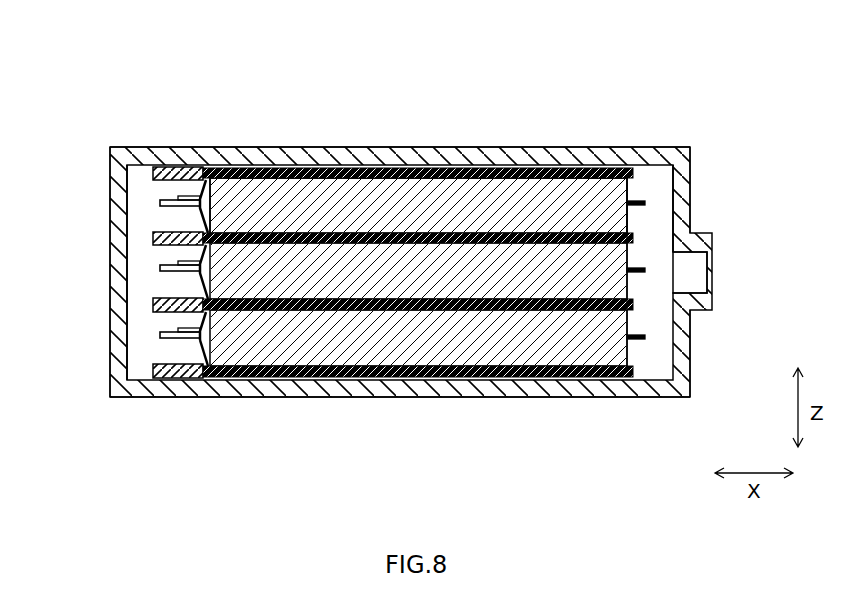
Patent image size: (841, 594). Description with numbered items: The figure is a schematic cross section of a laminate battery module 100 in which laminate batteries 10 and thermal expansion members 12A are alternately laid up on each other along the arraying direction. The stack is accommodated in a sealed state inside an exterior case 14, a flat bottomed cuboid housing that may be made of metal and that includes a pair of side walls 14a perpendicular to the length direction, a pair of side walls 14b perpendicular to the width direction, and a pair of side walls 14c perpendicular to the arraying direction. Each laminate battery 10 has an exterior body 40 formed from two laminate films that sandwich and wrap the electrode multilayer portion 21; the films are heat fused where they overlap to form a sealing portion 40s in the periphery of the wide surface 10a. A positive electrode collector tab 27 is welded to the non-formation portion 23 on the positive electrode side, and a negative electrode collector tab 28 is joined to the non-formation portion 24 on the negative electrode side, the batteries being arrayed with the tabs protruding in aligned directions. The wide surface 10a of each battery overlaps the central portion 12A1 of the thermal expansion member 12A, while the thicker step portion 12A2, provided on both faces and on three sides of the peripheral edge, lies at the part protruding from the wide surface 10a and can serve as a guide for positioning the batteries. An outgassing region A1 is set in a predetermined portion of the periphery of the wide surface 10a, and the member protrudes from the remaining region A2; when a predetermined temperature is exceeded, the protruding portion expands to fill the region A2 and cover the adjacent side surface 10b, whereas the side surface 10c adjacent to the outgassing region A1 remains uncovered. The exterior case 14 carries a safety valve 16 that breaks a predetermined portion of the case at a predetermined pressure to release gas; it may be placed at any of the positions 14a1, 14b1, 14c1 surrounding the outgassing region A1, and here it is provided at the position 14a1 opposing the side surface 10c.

The laminate battery module 100 is at (400, 259).
The exterior case 14 is at (408, 272).
The side walls 14a is at (113, 272).
The position 14a1 is at (693, 368).
The side walls 14b is at (140, 217).
The position 14b1 is at (648, 190).
The side walls 14c is at (360, 150).
The position 14c1 is at (652, 397).
The safety valve 16 is at (712, 270).
The laminate battery 10 is at (413, 269).
The wide surface 10a is at (438, 178).
The side surface 10b is at (205, 185).
The side surface 10c is at (628, 217).
The electrode multilayer portion 21 is at (577, 195).
The thermal expansion member 12A is at (340, 264).
The central portion 12A1 is at (266, 170).
The step portion 12A2 is at (196, 170).
The exterior body 40 is at (383, 318).
The sealing portion 40s is at (645, 274).
The positive electrode collector tab 27 is at (113, 337).
The negative electrode collector tab 28 is at (160, 337).
The non-formation portion 23 is at (213, 398).
The non-formation portion 24 is at (212, 365).
The outgassing region A1 is at (678, 191).
The region A2 is at (147, 372).